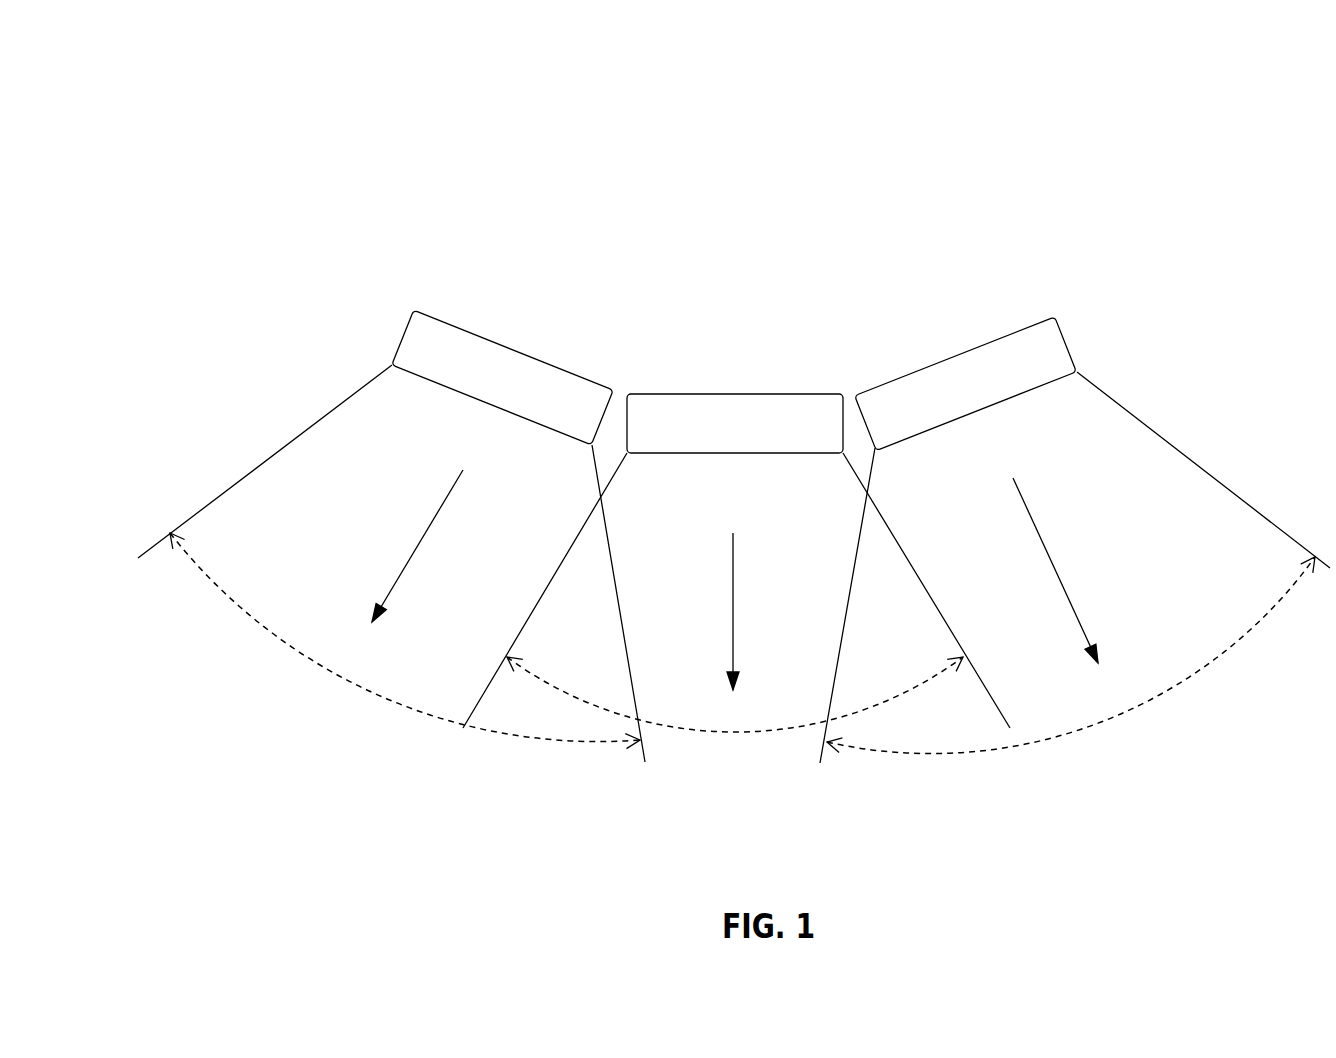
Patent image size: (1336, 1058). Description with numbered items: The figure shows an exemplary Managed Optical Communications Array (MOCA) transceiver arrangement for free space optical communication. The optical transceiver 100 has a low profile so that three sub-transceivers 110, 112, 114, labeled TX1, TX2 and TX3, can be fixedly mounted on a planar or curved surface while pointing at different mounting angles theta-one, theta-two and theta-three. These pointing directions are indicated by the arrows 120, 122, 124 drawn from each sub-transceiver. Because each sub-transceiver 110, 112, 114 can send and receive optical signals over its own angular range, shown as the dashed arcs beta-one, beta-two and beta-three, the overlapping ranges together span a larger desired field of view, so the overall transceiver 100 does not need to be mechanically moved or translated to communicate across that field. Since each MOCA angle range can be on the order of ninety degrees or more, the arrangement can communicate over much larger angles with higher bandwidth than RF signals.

The optical transceiver 100 is at (362, 233).
The sub-transceiver 110 is at (448, 320).
The sub-transceiver 112 is at (673, 395).
The sub-transceiver 114 is at (1032, 325).
The arrow 120 is at (433, 518).
The arrow 122 is at (733, 553).
The arrow 124 is at (1055, 568).